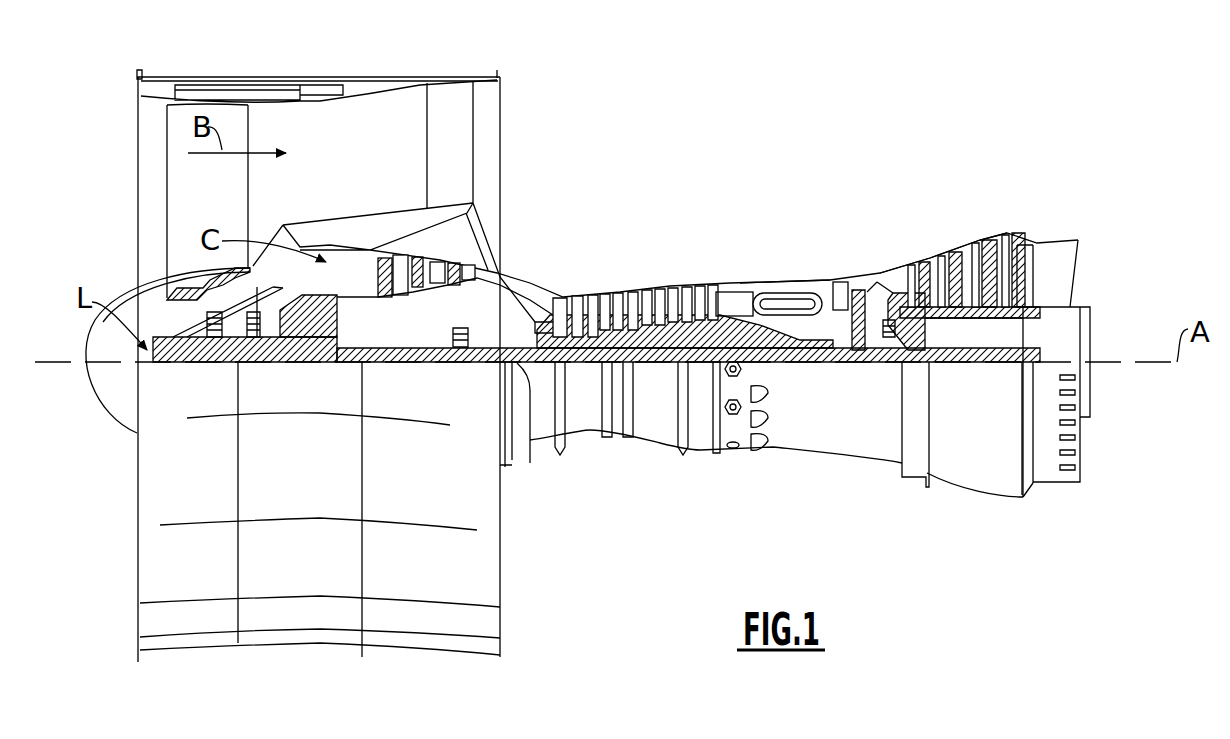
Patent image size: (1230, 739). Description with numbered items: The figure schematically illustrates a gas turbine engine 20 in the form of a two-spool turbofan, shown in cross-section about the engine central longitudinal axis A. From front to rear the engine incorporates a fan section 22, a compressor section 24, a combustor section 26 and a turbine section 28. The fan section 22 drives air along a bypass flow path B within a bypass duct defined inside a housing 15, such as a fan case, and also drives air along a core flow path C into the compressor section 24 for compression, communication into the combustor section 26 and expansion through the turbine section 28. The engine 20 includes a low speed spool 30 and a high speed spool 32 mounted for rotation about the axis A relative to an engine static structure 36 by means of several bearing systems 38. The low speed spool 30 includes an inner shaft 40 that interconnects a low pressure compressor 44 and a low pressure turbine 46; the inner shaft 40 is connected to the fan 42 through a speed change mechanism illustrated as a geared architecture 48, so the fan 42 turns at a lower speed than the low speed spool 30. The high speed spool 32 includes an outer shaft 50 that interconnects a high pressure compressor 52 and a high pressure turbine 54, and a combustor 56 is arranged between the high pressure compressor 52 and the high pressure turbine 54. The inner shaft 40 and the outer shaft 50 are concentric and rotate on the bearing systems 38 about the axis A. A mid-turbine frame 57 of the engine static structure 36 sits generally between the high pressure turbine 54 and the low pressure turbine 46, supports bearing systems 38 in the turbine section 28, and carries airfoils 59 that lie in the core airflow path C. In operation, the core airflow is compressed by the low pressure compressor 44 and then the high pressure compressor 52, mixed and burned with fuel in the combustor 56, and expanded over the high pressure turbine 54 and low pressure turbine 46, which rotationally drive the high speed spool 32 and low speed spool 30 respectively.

The housing 15 is at (320, 80).
The gas turbine engine 20 is at (777, 130).
The fan section 22 is at (250, 72).
The compressor section 24 is at (549, 270).
The combustor section 26 is at (773, 260).
The turbine section 28 is at (920, 220).
The low speed spool 30 is at (657, 367).
The high speed spool 32 is at (698, 327).
The engine static structure 36 is at (698, 448).
The bearing systems 38 is at (463, 345).
The inner shaft 40 is at (528, 455).
The fan 42 is at (222, 205).
The low pressure compressor 44 is at (427, 262).
The low pressure turbine 46 is at (965, 242).
The geared architecture 48 is at (327, 347).
The outer shaft 50 is at (783, 345).
The high pressure compressor 52 is at (637, 290).
The high pressure turbine 54 is at (837, 287).
The combustor 56 is at (773, 303).
The mid-turbine frame 57 is at (882, 268).
The airfoils 59 is at (880, 312).